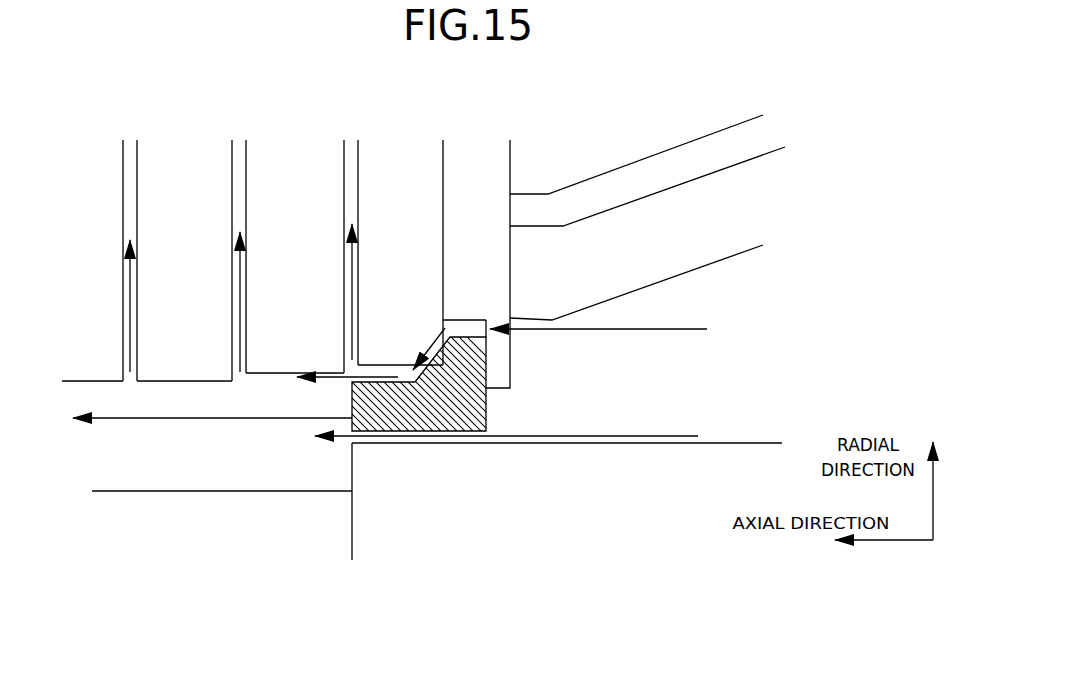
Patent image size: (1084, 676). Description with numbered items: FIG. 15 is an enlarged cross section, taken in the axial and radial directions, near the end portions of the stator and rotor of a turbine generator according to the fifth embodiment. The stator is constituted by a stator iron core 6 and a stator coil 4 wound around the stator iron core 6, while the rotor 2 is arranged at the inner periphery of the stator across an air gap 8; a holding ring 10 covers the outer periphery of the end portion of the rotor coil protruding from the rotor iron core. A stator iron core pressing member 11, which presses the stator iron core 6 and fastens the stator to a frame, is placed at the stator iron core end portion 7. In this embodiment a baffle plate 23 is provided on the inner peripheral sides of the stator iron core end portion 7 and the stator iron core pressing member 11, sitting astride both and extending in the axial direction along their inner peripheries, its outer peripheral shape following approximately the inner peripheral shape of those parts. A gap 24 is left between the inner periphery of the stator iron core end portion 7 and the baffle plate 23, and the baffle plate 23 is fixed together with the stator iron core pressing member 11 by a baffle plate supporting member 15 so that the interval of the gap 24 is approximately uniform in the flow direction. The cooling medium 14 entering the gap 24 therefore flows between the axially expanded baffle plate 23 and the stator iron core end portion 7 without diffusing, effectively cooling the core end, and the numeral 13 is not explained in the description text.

The rotor 2 is at (160, 520).
The stator coil 4 is at (743, 215).
The stator iron core 6 is at (185, 152).
The stator iron core end portion 7 is at (403, 152).
The air gap 8 is at (287, 477).
The holding ring 10 is at (738, 443).
The stator iron core pressing member 11 is at (462, 152).
The cooling passage 13 is at (352, 152).
The cooling medium 14 is at (688, 329).
The baffle plate supporting member 15 is at (500, 152).
The baffle plate 23 is at (480, 412).
The gap 24 is at (457, 323).